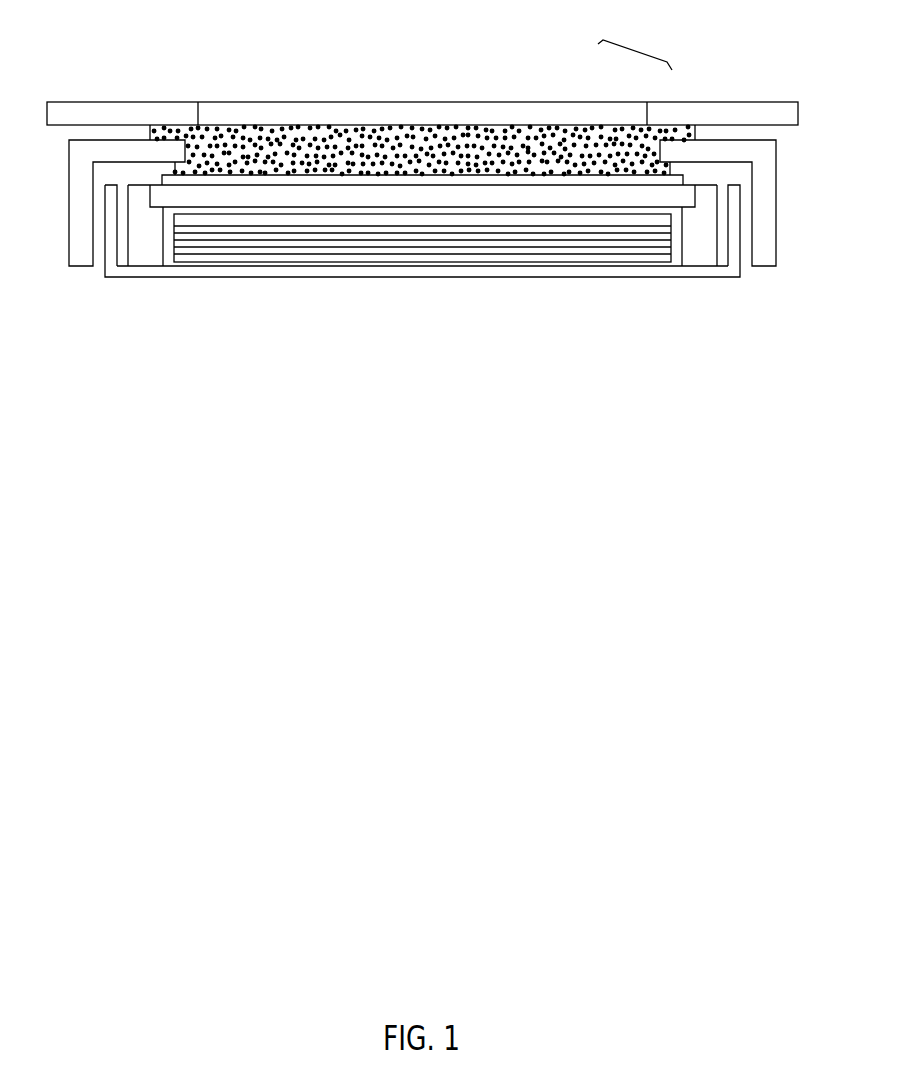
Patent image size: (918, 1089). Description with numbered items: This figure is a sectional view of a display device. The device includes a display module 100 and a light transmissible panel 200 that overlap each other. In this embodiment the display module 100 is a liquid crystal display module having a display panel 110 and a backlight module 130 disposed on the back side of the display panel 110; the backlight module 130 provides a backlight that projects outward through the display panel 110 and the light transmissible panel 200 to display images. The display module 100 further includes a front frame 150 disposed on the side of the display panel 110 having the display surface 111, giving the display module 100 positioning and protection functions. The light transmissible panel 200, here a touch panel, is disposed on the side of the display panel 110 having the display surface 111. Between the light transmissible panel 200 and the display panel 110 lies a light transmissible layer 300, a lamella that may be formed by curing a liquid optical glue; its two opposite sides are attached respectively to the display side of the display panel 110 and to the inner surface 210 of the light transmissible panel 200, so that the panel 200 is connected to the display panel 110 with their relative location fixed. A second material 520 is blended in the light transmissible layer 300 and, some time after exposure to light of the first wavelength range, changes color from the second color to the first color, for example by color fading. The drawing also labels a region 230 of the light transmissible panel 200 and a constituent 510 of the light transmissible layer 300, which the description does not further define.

The display module 100 is at (767, 333).
The display panel 110 is at (422, 261).
The display surface 111 is at (422, 108).
The backlight module 130 is at (422, 276).
The front frame 150 is at (422, 239).
The light transmissible panel 200 is at (422, 81).
The inner surface 210 is at (422, 238).
The outer surface of cover plate 230 is at (422, 81).
The light transmissible layer 300 is at (637, 42).
The adhesive matrix 510 is at (421, 92).
The second material 520 is at (420, 115).